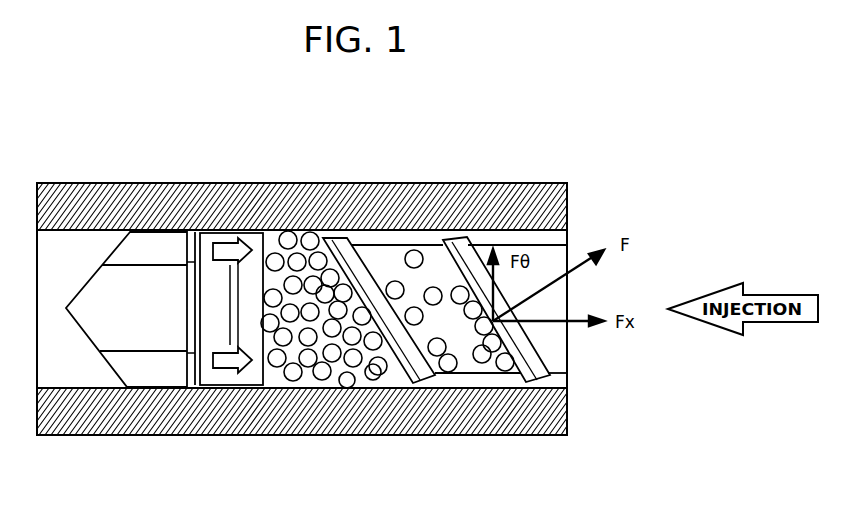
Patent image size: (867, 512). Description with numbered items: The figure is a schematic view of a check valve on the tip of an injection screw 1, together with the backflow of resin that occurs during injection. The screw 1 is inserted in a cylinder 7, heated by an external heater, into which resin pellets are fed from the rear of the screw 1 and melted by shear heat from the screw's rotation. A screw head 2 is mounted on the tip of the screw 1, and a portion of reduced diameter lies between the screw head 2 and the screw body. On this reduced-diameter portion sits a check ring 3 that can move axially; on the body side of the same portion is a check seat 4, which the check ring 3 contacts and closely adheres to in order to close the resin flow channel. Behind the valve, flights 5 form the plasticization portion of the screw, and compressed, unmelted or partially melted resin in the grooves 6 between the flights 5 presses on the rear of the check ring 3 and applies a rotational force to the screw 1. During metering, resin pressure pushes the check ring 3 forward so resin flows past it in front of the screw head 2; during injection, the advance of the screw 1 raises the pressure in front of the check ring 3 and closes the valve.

The screw 1 is at (397, 250).
The screw head 2 is at (148, 253).
The check ring 3 is at (212, 329).
The check seat 4 is at (248, 376).
The flights 5 is at (418, 375).
The grooves 6 is at (392, 367).
The cylinder 7 is at (202, 194).